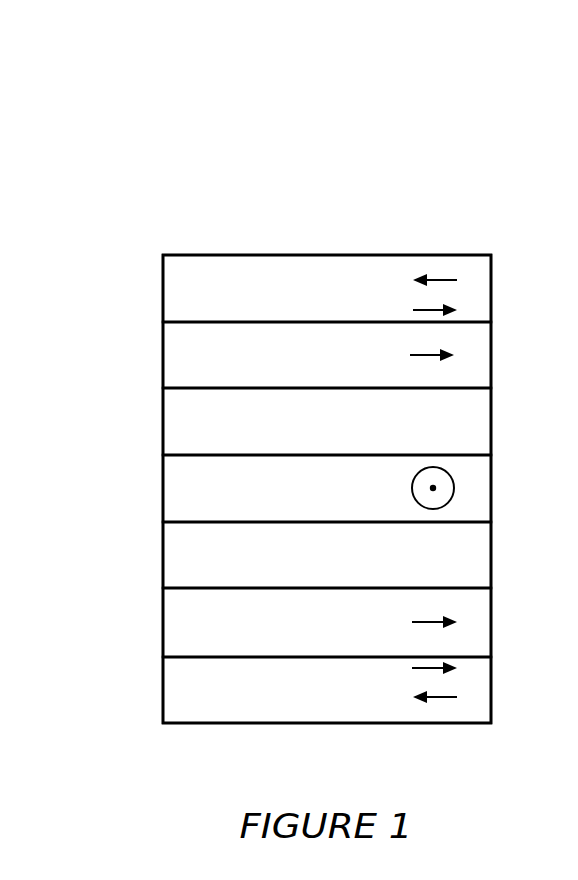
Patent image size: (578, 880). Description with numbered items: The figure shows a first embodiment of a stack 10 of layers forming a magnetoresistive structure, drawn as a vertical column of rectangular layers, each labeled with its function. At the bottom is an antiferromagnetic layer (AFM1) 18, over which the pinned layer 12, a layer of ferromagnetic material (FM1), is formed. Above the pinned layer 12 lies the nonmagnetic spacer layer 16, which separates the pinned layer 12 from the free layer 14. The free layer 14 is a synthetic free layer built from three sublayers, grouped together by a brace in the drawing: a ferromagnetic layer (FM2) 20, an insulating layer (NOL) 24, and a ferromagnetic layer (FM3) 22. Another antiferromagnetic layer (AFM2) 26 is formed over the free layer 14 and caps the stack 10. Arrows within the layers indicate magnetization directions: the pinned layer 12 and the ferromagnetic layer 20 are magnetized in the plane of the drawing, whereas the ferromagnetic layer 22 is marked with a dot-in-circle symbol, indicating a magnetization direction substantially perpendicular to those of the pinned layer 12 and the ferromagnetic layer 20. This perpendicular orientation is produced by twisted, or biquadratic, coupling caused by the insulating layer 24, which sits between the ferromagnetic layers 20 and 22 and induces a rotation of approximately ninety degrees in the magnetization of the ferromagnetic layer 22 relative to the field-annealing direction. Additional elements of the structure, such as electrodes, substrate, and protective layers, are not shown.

The stack 10 is at (306, 216).
The AFM layer (AFM2) 26 is at (178, 291).
The free layer 14 is at (161, 324).
The ferromagnetic layer (FM2) 20 is at (486, 357).
The insulating layer (NOL) 24 is at (476, 429).
The ferromagnetic layer (FM3) 22 is at (483, 492).
The nonmagnetic spacer layer 16 is at (183, 563).
The pinned layer 12 is at (183, 627).
The AFM layer (AFM1) 18 is at (184, 695).